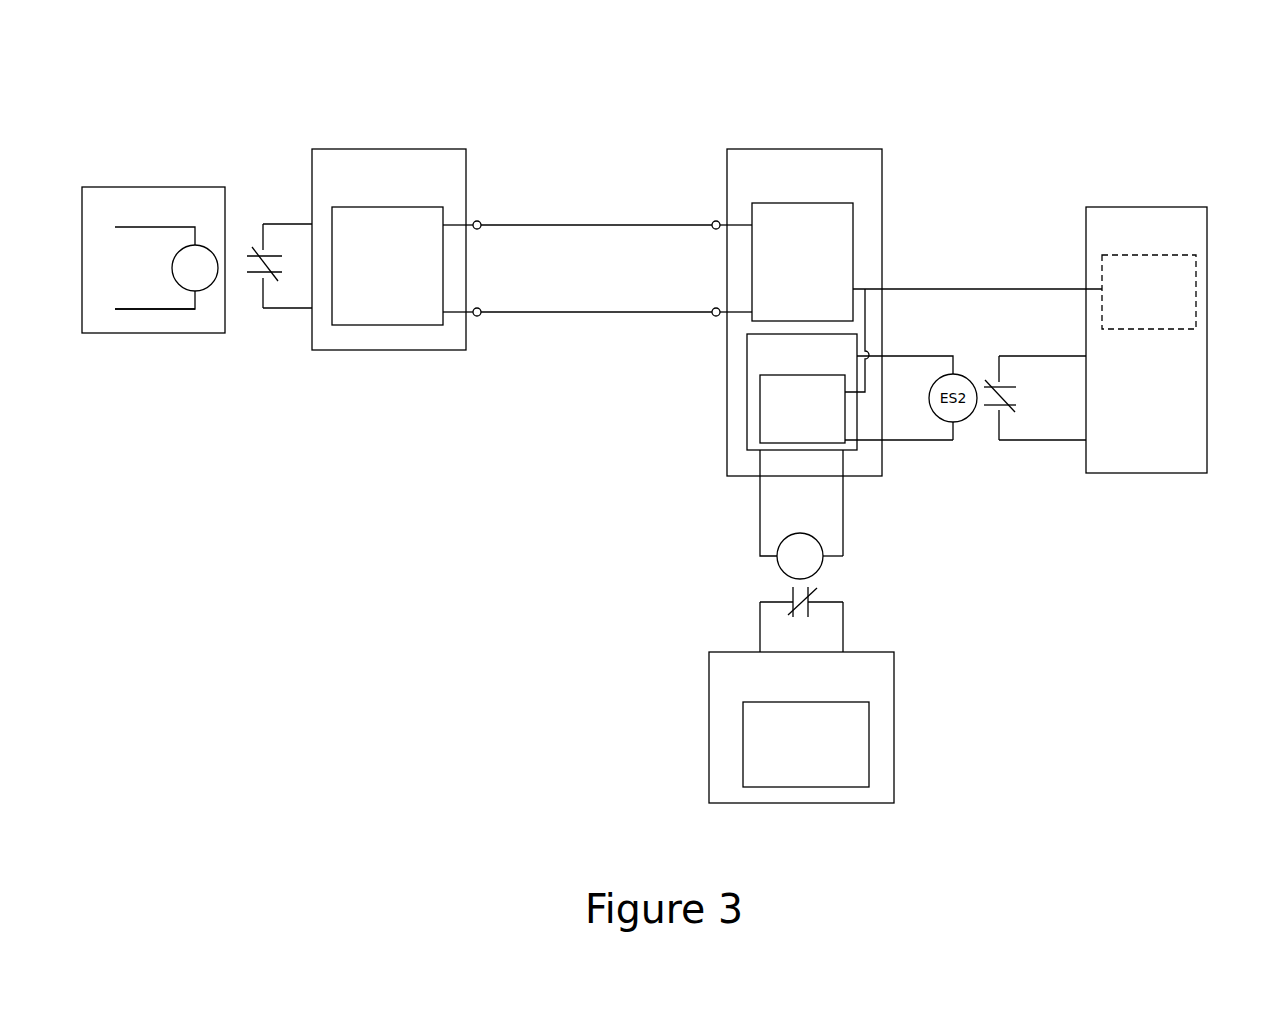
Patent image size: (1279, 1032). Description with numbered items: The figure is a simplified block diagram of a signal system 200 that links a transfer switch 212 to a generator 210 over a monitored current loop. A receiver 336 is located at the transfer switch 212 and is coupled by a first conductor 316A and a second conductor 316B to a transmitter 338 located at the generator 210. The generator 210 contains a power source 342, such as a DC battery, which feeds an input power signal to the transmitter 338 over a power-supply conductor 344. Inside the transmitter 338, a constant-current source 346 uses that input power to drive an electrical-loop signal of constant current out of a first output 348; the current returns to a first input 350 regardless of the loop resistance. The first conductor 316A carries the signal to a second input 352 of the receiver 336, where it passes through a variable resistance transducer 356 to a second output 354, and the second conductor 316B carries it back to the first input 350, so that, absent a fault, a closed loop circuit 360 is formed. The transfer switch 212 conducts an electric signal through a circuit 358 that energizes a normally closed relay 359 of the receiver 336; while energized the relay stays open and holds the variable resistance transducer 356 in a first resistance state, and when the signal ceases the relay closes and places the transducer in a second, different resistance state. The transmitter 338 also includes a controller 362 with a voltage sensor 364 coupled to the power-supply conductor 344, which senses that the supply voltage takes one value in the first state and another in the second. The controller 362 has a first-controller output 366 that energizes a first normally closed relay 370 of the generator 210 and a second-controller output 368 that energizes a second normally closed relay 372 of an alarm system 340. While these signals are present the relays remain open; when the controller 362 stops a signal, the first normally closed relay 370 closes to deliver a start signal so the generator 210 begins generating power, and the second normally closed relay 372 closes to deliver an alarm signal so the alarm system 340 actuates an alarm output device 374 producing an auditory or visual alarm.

The signal system 200 is at (1139, 42).
The generator 210 is at (1172, 207).
The transfer switch 212 is at (190, 187).
The first conductor 316A is at (570, 225).
The second conductor 316B is at (570, 312).
The receiver 336 is at (438, 149).
The transmitter 338 is at (845, 149).
The alarm system 340 is at (857, 652).
The power source 342 is at (1196, 290).
The power-supply conductor 344 is at (973, 289).
The constant-current source 346 is at (853, 233).
The first output 348 is at (715, 221).
The first input 350 is at (715, 308).
The second input 352 is at (478, 221).
The second output 354 is at (478, 308).
The variable resistance transducer 356 is at (427, 325).
The circuit 358 is at (163, 310).
The normally closed relay 359 is at (249, 304).
The closed loop circuit 360 is at (617, 154).
The controller 362 is at (747, 380).
The voltage sensor 364 is at (760, 435).
The first-controller output 366 is at (927, 356).
The second-controller output 368 is at (757, 547).
The first normally closed relay 370 is at (981, 424).
The second normally closed relay 372 is at (840, 590).
The alarm output device 374 is at (806, 744).